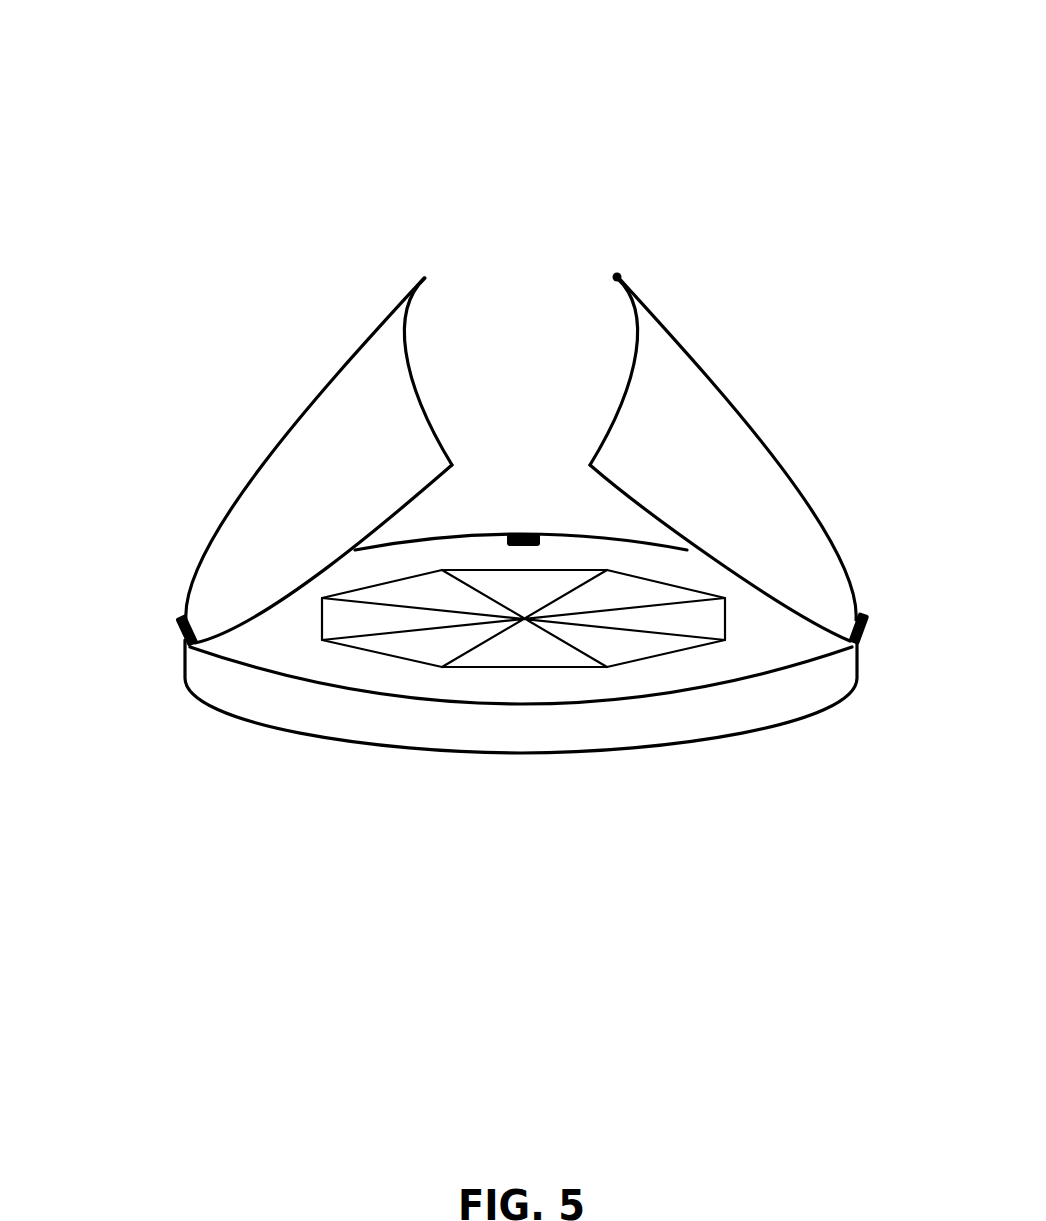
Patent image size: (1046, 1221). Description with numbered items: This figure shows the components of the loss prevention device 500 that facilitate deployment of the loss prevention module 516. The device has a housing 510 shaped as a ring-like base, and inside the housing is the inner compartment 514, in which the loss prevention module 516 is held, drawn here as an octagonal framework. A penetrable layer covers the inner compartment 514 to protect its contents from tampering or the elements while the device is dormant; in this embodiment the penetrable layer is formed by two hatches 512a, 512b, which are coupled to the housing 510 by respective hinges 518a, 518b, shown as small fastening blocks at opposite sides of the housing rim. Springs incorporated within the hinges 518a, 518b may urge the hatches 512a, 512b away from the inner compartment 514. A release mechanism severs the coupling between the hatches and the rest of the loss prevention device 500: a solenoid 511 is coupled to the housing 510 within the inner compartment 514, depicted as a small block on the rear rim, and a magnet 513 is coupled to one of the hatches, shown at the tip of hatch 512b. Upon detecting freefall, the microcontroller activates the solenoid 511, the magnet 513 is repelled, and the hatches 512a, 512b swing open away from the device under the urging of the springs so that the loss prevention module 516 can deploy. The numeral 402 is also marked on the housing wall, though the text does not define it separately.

The loss prevention device 500 is at (186, 66).
The housing 510 is at (277, 711).
The solenoid 511 is at (523, 533).
The hatch 512a is at (278, 437).
The hatch 512b is at (770, 437).
The magnet 513 is at (617, 277).
The inner compartment 514 is at (682, 675).
The loss prevention module 516 is at (407, 662).
The hinge 518a is at (183, 630).
The hinge 518b is at (866, 614).
The base 402 is at (810, 652).